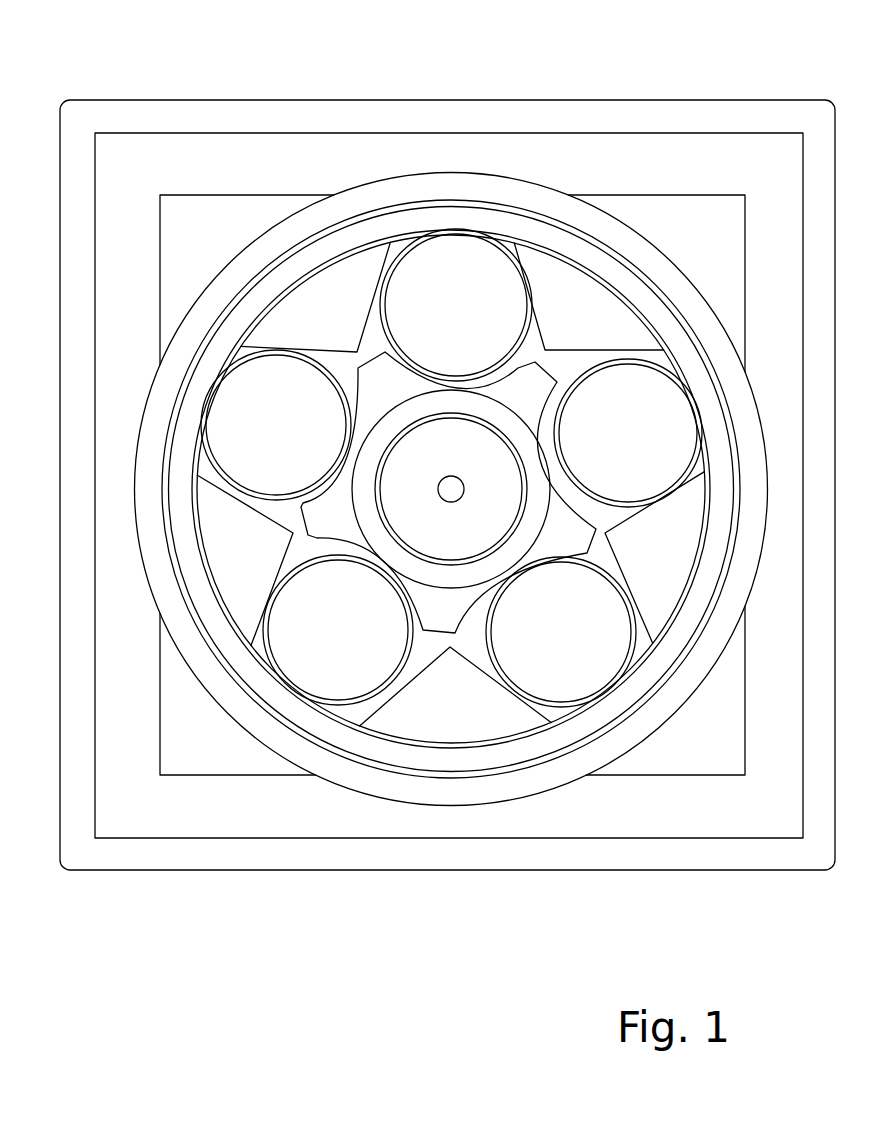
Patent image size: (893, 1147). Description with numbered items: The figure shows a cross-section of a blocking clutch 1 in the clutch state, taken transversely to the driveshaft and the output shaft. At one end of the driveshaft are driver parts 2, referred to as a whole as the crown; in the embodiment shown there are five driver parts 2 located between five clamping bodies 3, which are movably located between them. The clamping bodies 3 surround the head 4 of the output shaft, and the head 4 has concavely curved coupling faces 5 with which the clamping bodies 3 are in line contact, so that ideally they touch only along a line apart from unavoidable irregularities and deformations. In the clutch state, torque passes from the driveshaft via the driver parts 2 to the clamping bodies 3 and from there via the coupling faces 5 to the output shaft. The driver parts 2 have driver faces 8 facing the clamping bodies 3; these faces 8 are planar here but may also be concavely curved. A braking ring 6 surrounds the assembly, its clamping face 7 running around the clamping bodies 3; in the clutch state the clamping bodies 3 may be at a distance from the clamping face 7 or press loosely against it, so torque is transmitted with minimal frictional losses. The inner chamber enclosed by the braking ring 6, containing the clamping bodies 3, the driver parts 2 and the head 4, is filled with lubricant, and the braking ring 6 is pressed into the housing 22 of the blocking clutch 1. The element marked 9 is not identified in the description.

The blocking clutch 1 is at (245, 893).
The driver parts 2 is at (567, 283).
The clamping bodies 3 is at (479, 623).
The head of the output shaft 4 is at (424, 471).
The coupling faces 5 is at (573, 687).
The braking ring 6 is at (640, 285).
The clamping face 7 is at (391, 246).
The driver faces 8 is at (378, 330).
The carrier tab 9 is at (612, 545).
The housing 22 is at (168, 113).